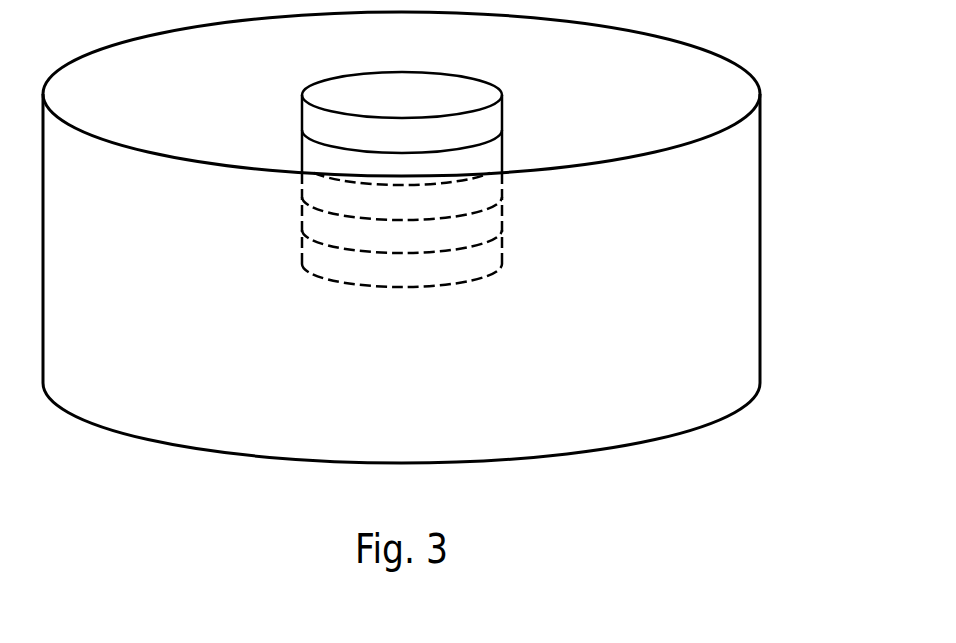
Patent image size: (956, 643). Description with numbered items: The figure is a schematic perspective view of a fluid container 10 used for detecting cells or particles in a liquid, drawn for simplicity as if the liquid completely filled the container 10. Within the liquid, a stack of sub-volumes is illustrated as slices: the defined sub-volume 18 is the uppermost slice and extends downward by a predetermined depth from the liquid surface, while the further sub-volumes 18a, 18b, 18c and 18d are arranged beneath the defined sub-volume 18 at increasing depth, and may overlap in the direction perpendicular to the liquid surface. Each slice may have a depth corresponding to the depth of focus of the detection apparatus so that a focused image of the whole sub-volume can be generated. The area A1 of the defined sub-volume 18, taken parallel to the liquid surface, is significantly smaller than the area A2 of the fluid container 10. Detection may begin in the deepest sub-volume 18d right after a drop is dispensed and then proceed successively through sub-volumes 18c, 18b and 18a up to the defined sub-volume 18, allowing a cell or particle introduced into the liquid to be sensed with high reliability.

The fluid container 10 is at (760, 200).
The defined sub-volume 18 is at (455, 165).
The sub-volume 18a is at (503, 152).
The sub-volume 18b is at (502, 188).
The sub-volume 18c is at (502, 220).
The sub-volume 18d is at (502, 252).
The area of the defined sub-volume A1 is at (344, 95).
The area of the fluid container A2 is at (96, 97).